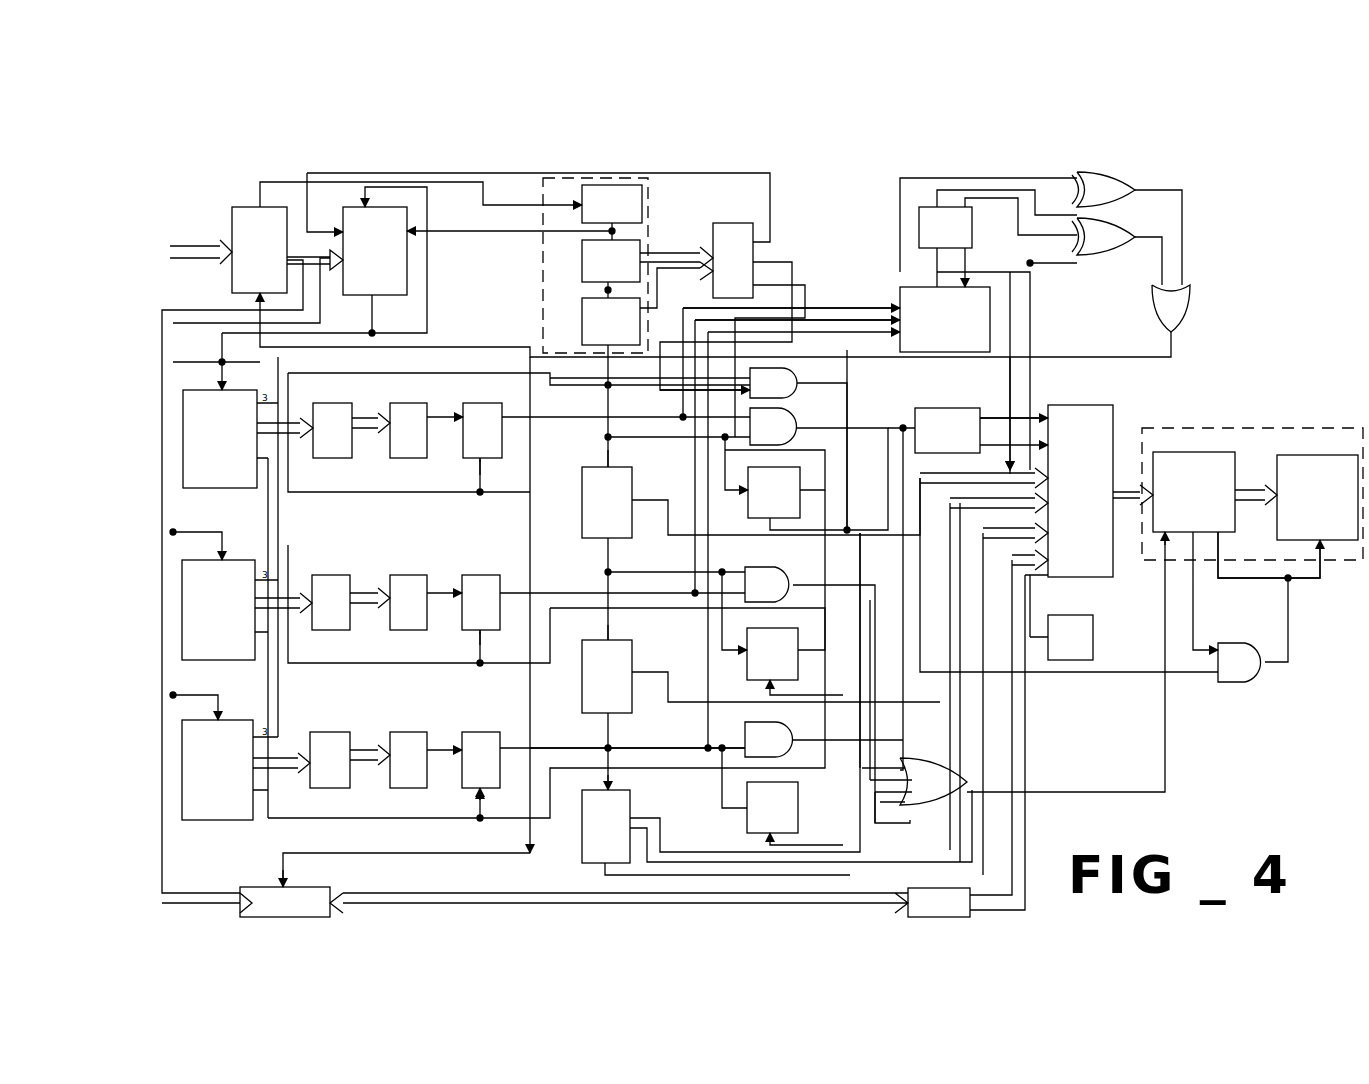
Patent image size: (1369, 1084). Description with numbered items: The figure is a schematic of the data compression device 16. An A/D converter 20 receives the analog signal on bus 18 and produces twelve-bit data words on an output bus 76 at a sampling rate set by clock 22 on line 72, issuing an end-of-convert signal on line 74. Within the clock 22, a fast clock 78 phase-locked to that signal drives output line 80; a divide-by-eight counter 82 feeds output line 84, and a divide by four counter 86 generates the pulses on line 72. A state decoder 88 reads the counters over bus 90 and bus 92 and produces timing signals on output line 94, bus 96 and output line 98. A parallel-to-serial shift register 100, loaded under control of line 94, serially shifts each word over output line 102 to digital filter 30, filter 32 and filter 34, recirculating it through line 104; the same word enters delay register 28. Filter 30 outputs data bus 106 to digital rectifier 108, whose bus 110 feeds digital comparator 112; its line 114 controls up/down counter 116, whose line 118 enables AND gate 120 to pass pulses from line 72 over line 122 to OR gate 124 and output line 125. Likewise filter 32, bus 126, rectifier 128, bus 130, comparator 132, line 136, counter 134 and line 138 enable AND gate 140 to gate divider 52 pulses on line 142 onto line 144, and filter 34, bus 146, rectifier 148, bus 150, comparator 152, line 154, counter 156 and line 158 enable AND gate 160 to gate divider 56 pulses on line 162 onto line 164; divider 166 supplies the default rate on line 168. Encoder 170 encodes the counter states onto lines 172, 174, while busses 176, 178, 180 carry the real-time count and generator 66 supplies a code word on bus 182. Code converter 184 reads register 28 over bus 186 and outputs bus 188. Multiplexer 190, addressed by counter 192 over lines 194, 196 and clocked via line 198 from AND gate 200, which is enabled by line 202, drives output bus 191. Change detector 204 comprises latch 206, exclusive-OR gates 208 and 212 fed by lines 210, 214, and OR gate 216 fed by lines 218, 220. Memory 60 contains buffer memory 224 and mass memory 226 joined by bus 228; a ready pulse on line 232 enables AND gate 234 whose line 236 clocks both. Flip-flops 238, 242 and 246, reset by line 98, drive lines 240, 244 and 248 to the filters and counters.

The data compression device 16 is at (1246, 283).
The bus 18 is at (208, 258).
The A/D converter 20 is at (236, 207).
The clock 22 is at (648, 178).
The delay register 28 is at (332, 890).
The digital filter 30 is at (222, 390).
The digital filter 32 is at (236, 555).
The digital filter 34 is at (234, 716).
The divider 52 is at (632, 477).
The divider 56 is at (632, 647).
The memory 60 is at (1228, 428).
The unique code word generator 66 is at (1093, 637).
The line 72 is at (615, 383).
The line 74 is at (483, 210).
The output bus 76 is at (308, 230).
The fast clock 78 is at (648, 212).
The output line 80 is at (590, 231).
The divide-by-eight counter 82 is at (582, 264).
The output line 84 is at (604, 292).
The divide by four counter 86 is at (582, 336).
The state decoder 88 is at (731, 223).
The bus 90 is at (660, 250).
The bus 92 is at (660, 300).
The output line 94 is at (770, 210).
The bus 96 is at (792, 268).
The output line 98 is at (805, 290).
The parallel-to-serial shift register 100 is at (380, 295).
The output line 102 is at (360, 306).
The line 104 is at (427, 310).
The data bus 106 is at (296, 423).
The digital rectifier 108 is at (325, 458).
The bus 110 is at (368, 415).
The digital comparator 112 is at (402, 458).
The line 114 is at (443, 415).
The up/down 8-bit counter 116 is at (487, 460).
The line 118 is at (512, 417).
The AND gate 120 is at (790, 425).
The line 122 is at (862, 428).
The OR gate 124 is at (935, 768).
The output line 125 is at (1125, 792).
The bus 126 is at (296, 598).
The digital rectifier 128 is at (340, 575).
The output bus 130 is at (362, 630).
The digital comparator 132 is at (405, 575).
The up/down 8-bit counter 134 is at (478, 575).
The line 136 is at (440, 605).
The line 138 is at (512, 600).
The AND gate 140 is at (790, 570).
The line 142 is at (678, 568).
The line 144 is at (862, 587).
The bus 146 is at (296, 758).
The digital rectifier 148 is at (342, 788).
The output bus 150 is at (345, 732).
The comparator 152 is at (405, 732).
The line 154 is at (440, 760).
The 8-bit two-state counter 156 is at (478, 732).
The line 158 is at (512, 760).
The AND gate 160 is at (752, 722).
The line 162 is at (620, 748).
The line 164 is at (793, 736).
The divider 166 is at (630, 790).
The output line 168 is at (605, 870).
The 4-level to 2-bit encoder 170 is at (900, 346).
The line 172 is at (990, 290).
The line 174 is at (900, 285).
The data bus 176 is at (668, 540).
The data bus 178 is at (748, 687).
The data bus 180 is at (722, 848).
The bus 182 is at (1012, 615).
The code converter 184 is at (910, 887).
The bus 186 is at (788, 900).
The bus 188 is at (1025, 807).
The multiplexer 190 is at (1108, 577).
The output bus 191 is at (1128, 475).
The multiplexer address counter 192 is at (947, 408).
The line 194 is at (997, 418).
The line 196 is at (1038, 440).
The line 198 is at (895, 390).
The AND gate 200 is at (788, 370).
The input line 202 is at (748, 370).
The change of memory clock rate detector means 204 is at (1193, 215).
The 2-bit latch 206 is at (919, 225).
The exclusive-OR gate 208 is at (1135, 184).
The line 210 is at (988, 225).
The exclusive-OR gate 212 is at (1135, 232).
The line 214 is at (1030, 230).
The OR gate 216 is at (1190, 312).
The line 218 is at (1182, 270).
The line 220 is at (1162, 275).
The first in, first out buffer memory 224 is at (1218, 450).
The mass memory 226 is at (1292, 450).
The bus 228 is at (1143, 662).
The line 232 is at (1195, 590).
The AND gate 234 is at (1250, 682).
The line 236 is at (1290, 595).
The flip-flop 238 is at (800, 505).
The line 240 is at (825, 475).
The flip-flop 242 is at (798, 668).
The line 244 is at (825, 624).
The flip-flop 246 is at (740, 812).
The line 248 is at (788, 768).